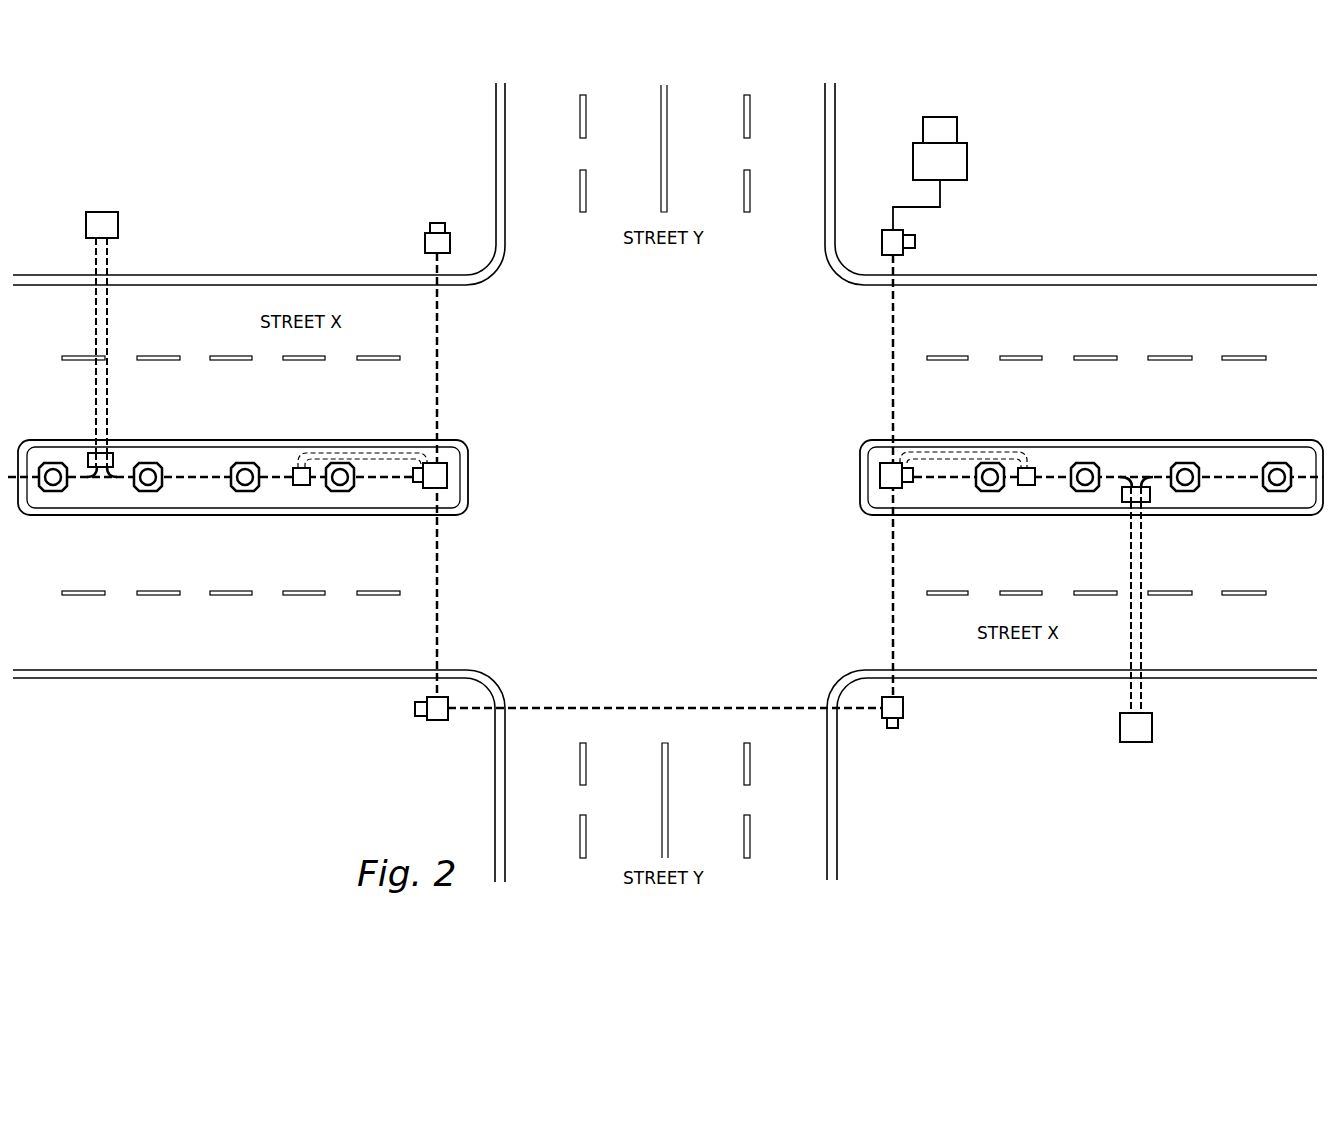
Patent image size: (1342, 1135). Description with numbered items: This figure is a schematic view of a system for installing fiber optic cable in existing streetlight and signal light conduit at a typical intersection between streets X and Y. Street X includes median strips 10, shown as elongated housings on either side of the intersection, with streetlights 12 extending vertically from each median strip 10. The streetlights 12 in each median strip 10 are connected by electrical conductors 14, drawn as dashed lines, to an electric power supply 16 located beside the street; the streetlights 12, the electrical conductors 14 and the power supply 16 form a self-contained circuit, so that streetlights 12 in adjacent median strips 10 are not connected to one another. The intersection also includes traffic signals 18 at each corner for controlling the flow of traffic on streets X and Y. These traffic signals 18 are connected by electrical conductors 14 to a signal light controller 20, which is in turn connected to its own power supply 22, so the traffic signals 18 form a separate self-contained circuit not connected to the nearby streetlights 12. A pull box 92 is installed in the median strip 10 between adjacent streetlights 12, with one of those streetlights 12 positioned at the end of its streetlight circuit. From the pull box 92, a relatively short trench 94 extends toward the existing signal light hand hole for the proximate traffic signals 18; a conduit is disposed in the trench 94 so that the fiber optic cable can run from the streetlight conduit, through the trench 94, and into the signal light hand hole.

The median strip 10 is at (138, 515).
The streetlight 12 is at (148, 463).
The electrical conductor 14 is at (110, 328).
The electric power supply 16 is at (86, 222).
The traffic signal 18 is at (435, 222).
The signal light controller 20 is at (913, 160).
The power supply 22 is at (923, 125).
The pull box 92 is at (86, 460).
The trench 94 is at (378, 465).